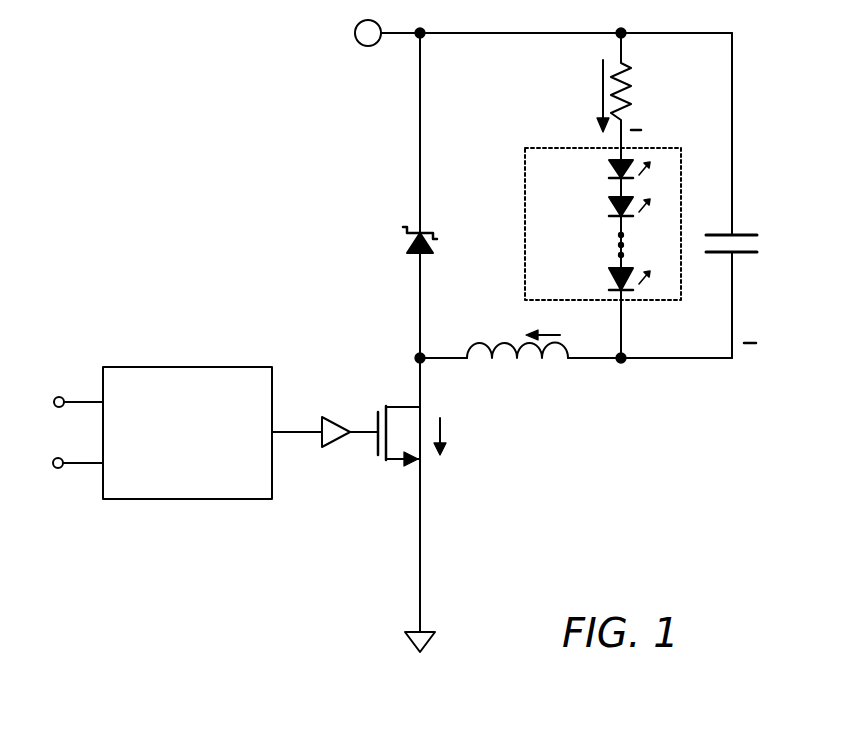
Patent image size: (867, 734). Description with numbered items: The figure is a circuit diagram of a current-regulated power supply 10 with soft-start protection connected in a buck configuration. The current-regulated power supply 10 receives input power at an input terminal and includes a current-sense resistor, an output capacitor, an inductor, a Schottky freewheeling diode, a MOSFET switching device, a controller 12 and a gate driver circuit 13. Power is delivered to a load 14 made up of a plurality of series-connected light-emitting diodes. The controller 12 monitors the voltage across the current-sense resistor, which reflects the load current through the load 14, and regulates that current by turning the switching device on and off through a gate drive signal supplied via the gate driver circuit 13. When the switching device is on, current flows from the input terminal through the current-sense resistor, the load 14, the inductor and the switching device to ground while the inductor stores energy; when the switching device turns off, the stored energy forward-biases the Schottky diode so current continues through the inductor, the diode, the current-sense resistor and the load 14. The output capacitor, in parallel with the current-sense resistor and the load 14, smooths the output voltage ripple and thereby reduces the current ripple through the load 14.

The current-regulated power supply 10 is at (166, 126).
The controller 12 is at (186, 366).
The gate driver circuit 13 is at (339, 428).
The load 14 is at (681, 195).